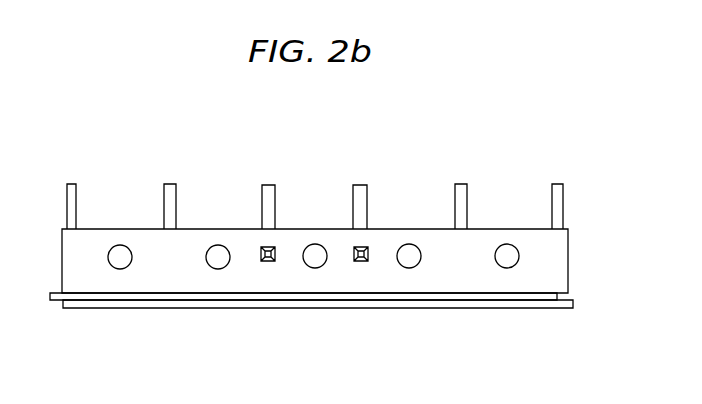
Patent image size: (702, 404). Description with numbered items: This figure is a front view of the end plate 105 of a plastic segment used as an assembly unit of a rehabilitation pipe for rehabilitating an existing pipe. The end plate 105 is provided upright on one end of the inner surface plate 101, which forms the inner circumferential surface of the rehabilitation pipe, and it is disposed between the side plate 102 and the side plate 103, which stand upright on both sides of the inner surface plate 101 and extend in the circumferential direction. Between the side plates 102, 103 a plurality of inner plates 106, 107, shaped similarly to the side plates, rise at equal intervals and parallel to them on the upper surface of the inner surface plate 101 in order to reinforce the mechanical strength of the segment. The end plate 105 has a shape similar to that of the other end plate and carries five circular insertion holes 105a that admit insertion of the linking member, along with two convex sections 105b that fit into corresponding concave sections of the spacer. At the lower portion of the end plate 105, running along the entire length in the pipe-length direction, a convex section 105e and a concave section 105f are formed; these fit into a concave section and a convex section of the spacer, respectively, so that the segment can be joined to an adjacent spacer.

The inner surface plate 101 is at (303, 308).
The side plate 102 is at (72, 182).
The side plate 103 is at (555, 183).
The end plate 105 is at (320, 245).
The circular insertion hole 105a is at (120, 245).
The convex section 105b is at (262, 247).
The convex section 105e is at (432, 292).
The concave section 105f is at (372, 302).
The inner plate 106 is at (166, 182).
The inner plate 107 is at (274, 183).